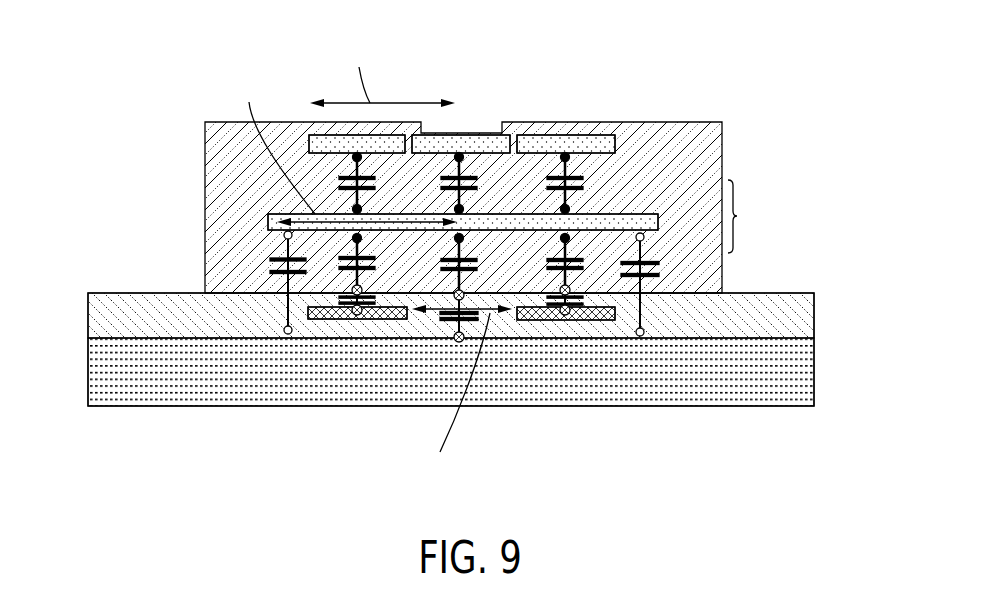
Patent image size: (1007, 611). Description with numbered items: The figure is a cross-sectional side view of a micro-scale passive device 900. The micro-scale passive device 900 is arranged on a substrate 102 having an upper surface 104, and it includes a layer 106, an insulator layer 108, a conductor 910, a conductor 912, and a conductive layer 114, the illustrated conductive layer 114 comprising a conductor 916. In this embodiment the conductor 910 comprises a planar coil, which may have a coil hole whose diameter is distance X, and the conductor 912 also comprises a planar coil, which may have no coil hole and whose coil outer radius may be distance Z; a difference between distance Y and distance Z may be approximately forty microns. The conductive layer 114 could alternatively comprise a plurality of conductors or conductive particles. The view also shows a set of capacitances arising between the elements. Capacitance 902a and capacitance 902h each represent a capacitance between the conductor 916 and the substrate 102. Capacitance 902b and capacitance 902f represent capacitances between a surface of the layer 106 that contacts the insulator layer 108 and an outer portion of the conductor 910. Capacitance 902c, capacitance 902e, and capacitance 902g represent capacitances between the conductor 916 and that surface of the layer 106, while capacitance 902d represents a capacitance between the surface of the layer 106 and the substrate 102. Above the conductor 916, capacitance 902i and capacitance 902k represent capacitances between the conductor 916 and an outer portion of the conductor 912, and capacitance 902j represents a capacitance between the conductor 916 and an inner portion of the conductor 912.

The micro-scale passive device 900 is at (186, 79).
The substrate 102 is at (103, 352).
The upper surface 104 is at (803, 329).
The layer 106 is at (103, 315).
The insulator layer 108 is at (217, 160).
The conductive layer 114 is at (751, 216).
The conductor 910 is at (310, 310).
The conductor 912 is at (593, 145).
The conductor 916 is at (600, 222).
The capacitance 902a is at (270, 264).
The capacitance 902b is at (388, 303).
The capacitance 902c is at (303, 359).
The capacitance 902d is at (455, 342).
The capacitance 902e is at (455, 264).
The capacitance 902f is at (521, 358).
The capacitance 902g is at (537, 322).
The capacitance 902h is at (633, 317).
The capacitance 902i is at (347, 178).
The capacitance 902j is at (466, 176).
The capacitance 902k is at (574, 178).